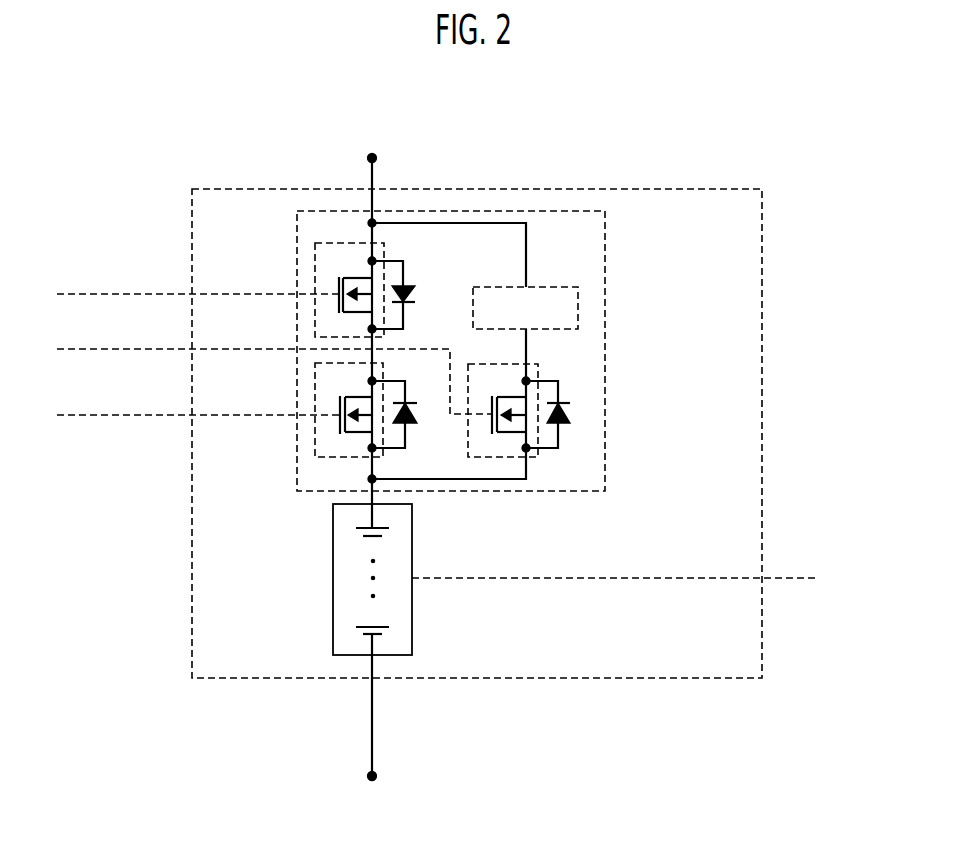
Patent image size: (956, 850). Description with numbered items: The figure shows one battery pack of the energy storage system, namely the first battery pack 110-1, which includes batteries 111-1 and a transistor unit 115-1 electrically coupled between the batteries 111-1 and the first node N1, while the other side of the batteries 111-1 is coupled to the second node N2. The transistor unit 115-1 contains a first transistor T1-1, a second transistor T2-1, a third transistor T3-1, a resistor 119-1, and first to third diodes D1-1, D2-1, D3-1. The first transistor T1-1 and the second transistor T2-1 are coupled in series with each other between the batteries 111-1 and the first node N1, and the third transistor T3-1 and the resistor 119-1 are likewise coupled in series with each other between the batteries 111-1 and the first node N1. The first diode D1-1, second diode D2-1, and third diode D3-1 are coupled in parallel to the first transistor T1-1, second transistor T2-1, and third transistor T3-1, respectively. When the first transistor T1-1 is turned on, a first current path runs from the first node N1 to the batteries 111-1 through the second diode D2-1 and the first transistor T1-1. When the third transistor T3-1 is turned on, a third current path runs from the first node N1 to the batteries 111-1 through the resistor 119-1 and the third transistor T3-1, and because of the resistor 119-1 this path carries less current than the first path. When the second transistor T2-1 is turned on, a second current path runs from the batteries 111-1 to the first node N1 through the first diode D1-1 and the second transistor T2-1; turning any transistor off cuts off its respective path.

The first battery pack 110-1 is at (762, 311).
The transistor unit 115-1 is at (605, 231).
The resistor 119-1 is at (578, 307).
The batteries 111-1 is at (397, 655).
The first transistor T1-1 is at (315, 448).
The second transistor T2-1 is at (315, 253).
The third transistor T3-1 is at (493, 457).
The first diode D1-1 is at (408, 414).
The second diode D2-1 is at (408, 295).
The third diode D3-1 is at (562, 414).
The first node N1 is at (384, 171).
The second node N2 is at (384, 788).